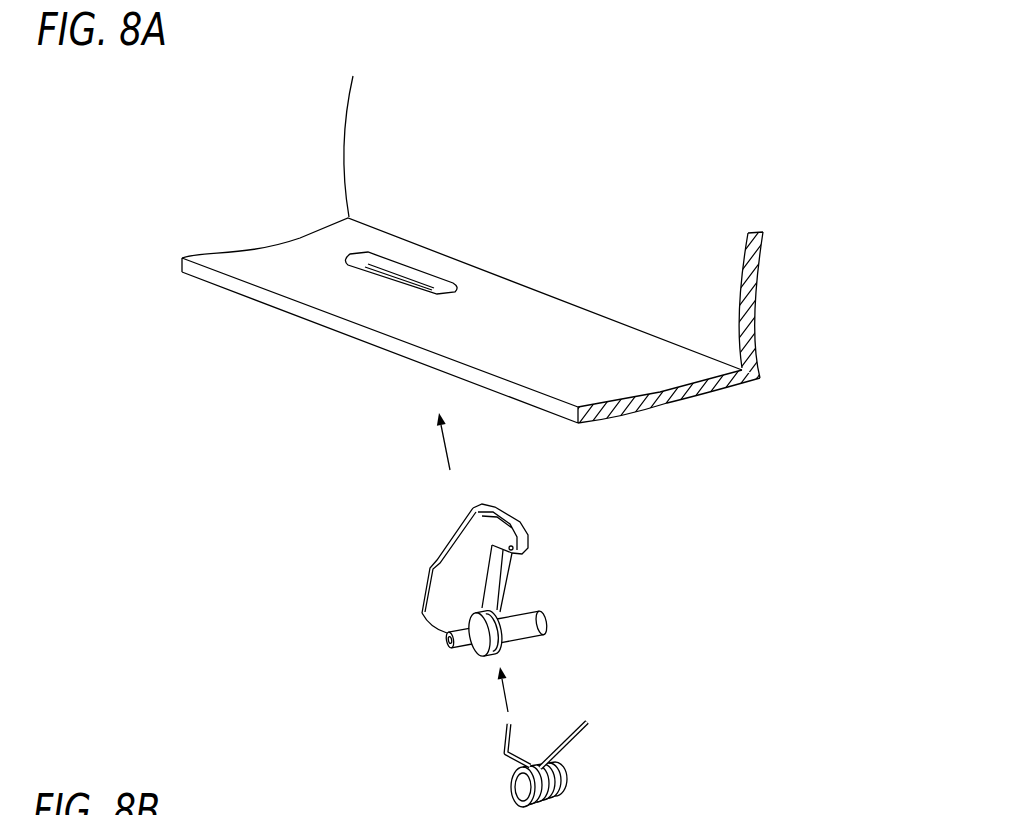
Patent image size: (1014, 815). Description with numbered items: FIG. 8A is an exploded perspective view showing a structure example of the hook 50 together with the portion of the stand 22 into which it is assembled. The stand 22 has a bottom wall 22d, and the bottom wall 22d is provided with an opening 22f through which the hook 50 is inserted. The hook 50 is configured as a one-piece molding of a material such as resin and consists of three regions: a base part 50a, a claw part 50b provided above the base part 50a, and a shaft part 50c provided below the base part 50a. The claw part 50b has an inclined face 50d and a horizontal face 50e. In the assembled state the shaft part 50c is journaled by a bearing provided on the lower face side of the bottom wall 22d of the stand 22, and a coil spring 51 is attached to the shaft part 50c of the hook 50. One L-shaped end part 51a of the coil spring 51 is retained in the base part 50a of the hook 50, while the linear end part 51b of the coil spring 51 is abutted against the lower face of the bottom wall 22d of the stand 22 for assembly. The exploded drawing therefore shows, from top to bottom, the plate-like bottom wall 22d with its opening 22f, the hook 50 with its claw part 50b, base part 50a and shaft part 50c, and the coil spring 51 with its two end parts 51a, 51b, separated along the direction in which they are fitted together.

The stand 22 is at (557, 270).
The opening 22f is at (408, 263).
The bottom wall 22d is at (667, 390).
The hook 50 is at (521, 563).
The base part 50a is at (433, 565).
The claw part 50b is at (644, 534).
The shaft part 50c is at (442, 642).
The inclined face 50d is at (520, 523).
The horizontal face 50e is at (520, 550).
The coil spring 51 is at (438, 763).
The L-shaped end part 51a is at (503, 743).
The linear end part 51b is at (594, 745).